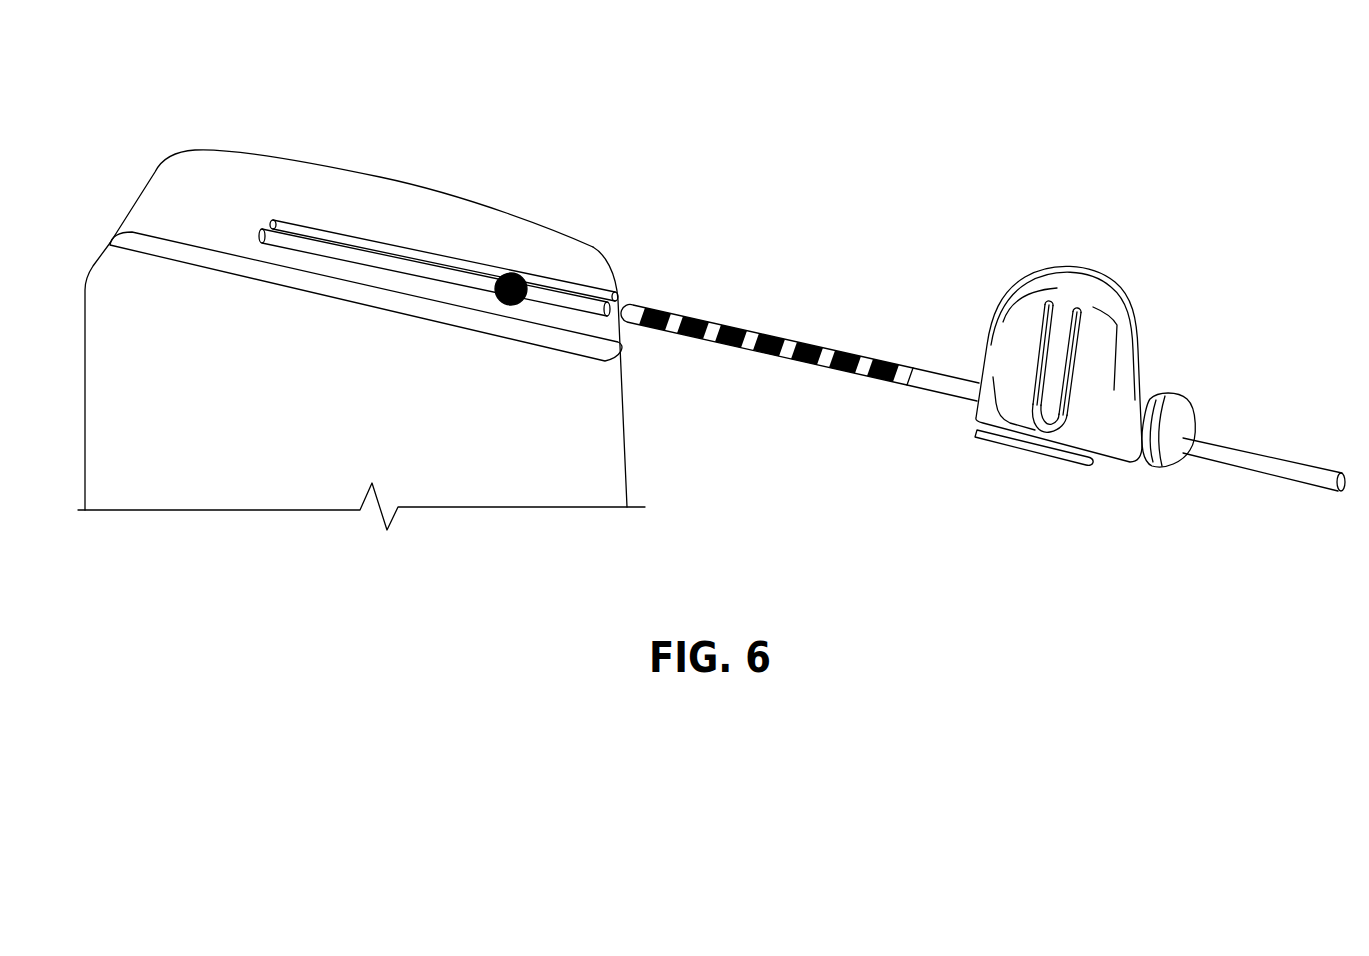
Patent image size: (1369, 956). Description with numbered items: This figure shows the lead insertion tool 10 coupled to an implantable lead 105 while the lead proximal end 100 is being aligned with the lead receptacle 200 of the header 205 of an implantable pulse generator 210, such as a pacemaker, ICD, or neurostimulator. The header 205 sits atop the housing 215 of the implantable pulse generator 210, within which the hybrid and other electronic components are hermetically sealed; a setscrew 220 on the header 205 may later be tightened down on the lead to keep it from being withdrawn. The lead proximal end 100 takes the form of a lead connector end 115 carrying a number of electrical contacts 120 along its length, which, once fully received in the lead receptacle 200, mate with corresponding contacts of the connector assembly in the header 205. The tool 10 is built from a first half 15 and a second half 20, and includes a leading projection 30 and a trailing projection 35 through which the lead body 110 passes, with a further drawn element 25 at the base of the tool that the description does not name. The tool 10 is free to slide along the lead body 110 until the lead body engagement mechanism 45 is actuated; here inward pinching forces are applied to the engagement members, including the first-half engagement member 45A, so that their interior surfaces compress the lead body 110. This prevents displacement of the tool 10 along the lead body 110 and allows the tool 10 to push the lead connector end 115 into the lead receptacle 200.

The lead insertion tool 10 is at (1032, 248).
The first half 15 is at (1138, 348).
The second half 20 is at (1125, 295).
The base plate 25 is at (1087, 457).
The leading projection 30 is at (933, 357).
The trailing projection 35 is at (1175, 483).
The lead body engagement mechanism 45 is at (1043, 407).
The lead body engagement mechanism first portion 45A is at (1073, 370).
The proximal end 100 is at (842, 393).
The implantable lead 105 is at (1303, 500).
The lead body 110 is at (1273, 450).
The lead connector end 115 is at (642, 299).
The electrical contacts 120 is at (727, 343).
The lead receptacle 200 is at (614, 302).
The header 205 is at (212, 165).
The implantable pulse generator 210 is at (398, 148).
The housing 215 is at (85, 280).
The setscrew 220 is at (512, 272).